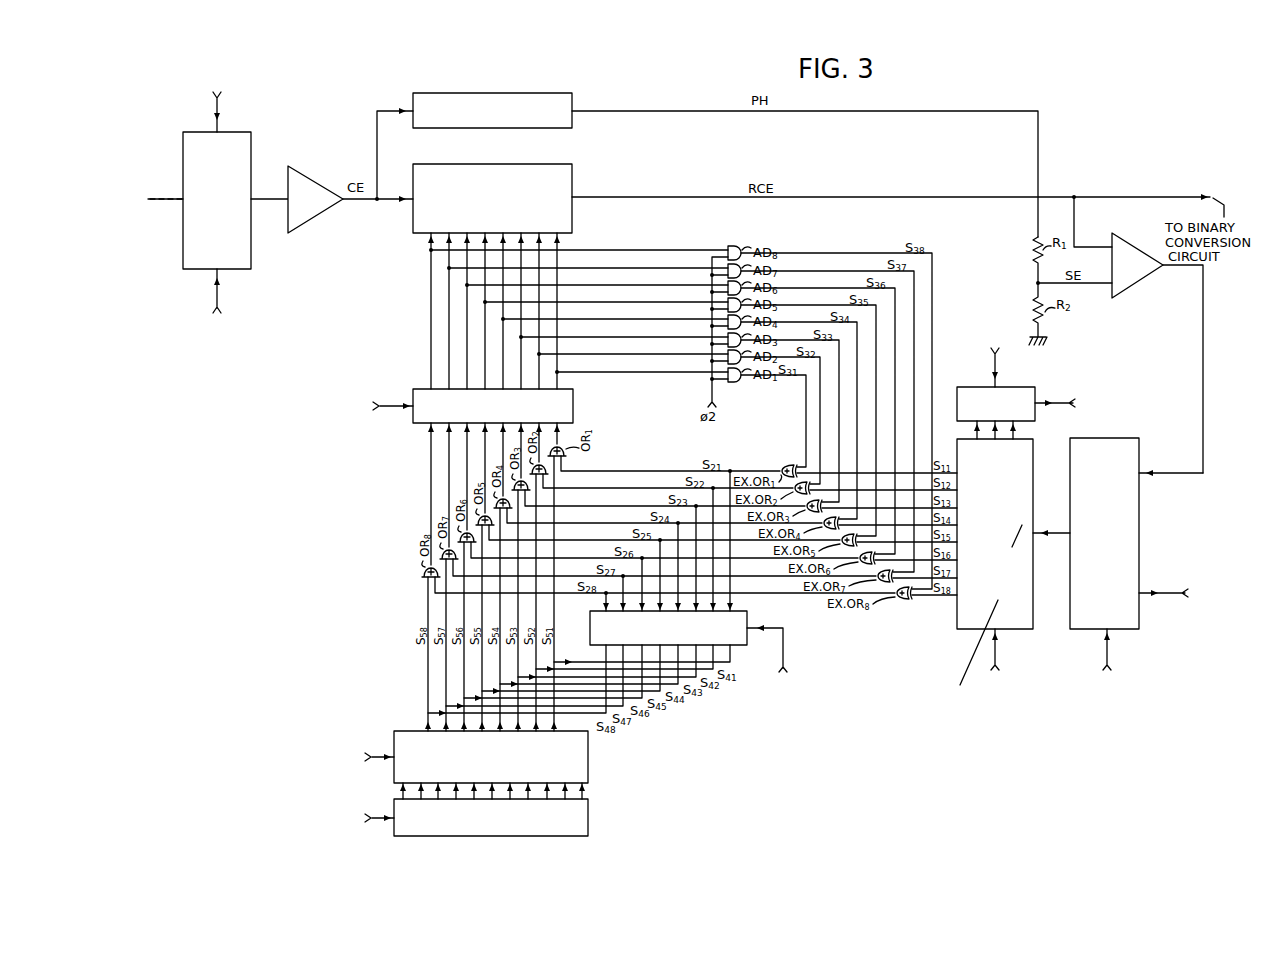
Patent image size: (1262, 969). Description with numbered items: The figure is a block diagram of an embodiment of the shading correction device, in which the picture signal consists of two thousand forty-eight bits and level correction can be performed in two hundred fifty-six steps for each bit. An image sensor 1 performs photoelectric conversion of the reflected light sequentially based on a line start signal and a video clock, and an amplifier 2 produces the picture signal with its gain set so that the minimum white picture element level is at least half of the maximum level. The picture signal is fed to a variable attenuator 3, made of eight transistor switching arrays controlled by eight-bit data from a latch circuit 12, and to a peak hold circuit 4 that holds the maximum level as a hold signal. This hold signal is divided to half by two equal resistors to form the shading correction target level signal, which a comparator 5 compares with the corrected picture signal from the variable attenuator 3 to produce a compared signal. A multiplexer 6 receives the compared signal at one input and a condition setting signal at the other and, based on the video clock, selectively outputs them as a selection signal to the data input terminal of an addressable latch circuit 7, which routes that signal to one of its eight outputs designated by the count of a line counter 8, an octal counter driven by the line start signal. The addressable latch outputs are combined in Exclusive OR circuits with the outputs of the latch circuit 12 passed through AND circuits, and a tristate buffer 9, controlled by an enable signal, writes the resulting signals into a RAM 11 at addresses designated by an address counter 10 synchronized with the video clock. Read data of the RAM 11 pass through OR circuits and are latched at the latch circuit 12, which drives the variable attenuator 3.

The image sensor 1 is at (239, 132).
The amplifier 2 is at (304, 177).
The variable attenuator 3 is at (575, 182).
The peak hold circuit 4 is at (573, 101).
The comparator 5 is at (1131, 245).
The multiplexer 6 is at (1140, 446).
The addressable latch circuit 7 is at (1034, 448).
The line counter 8 is at (1017, 387).
The tristate buffer 9 is at (749, 619).
The address counter 10 is at (589, 822).
The RAM 11 is at (589, 769).
The latch circuit 12 is at (574, 401).